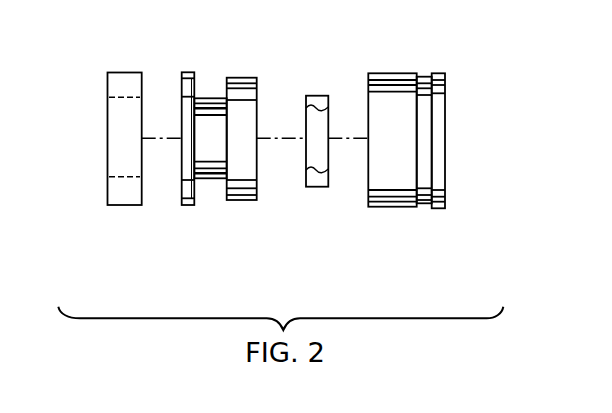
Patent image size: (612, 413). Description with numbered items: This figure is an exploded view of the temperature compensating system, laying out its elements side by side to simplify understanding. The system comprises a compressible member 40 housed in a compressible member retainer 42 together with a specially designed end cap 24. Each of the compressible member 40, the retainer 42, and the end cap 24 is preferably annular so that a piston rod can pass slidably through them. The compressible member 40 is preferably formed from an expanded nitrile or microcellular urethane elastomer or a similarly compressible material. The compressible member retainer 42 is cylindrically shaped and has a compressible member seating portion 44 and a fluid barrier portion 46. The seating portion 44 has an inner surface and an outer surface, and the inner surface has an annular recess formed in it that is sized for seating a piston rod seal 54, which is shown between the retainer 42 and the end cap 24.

The motor / drive unit 24 is at (387, 165).
The end block 40 is at (123, 188).
The flange member 42 is at (243, 83).
The hub 44 is at (223, 185).
The plate 46 is at (185, 200).
The shaft coupling 54 is at (317, 97).